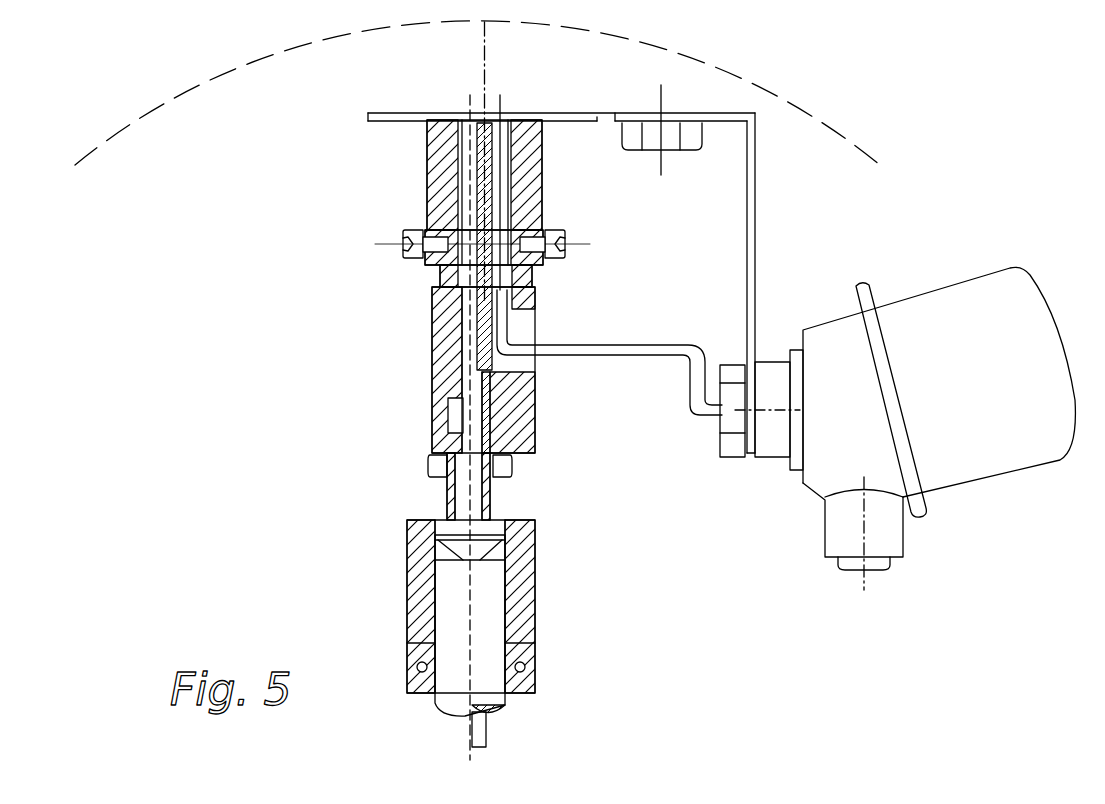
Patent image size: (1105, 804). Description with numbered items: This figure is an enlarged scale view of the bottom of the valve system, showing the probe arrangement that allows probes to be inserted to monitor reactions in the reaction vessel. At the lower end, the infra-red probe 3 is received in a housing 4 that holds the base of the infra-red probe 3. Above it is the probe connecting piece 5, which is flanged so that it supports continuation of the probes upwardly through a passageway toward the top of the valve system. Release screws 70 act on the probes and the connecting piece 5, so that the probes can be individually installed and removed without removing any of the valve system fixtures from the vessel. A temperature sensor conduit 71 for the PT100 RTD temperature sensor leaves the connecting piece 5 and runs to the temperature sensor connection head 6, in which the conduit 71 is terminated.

The infra-red probe 3 is at (455, 591).
The housing 4 is at (537, 623).
The probe connecting piece 5 is at (443, 357).
The temperature sensor connection head 6 is at (990, 272).
The release screws 70 is at (376, 246).
The temperature sensor conduit 71 is at (628, 342).